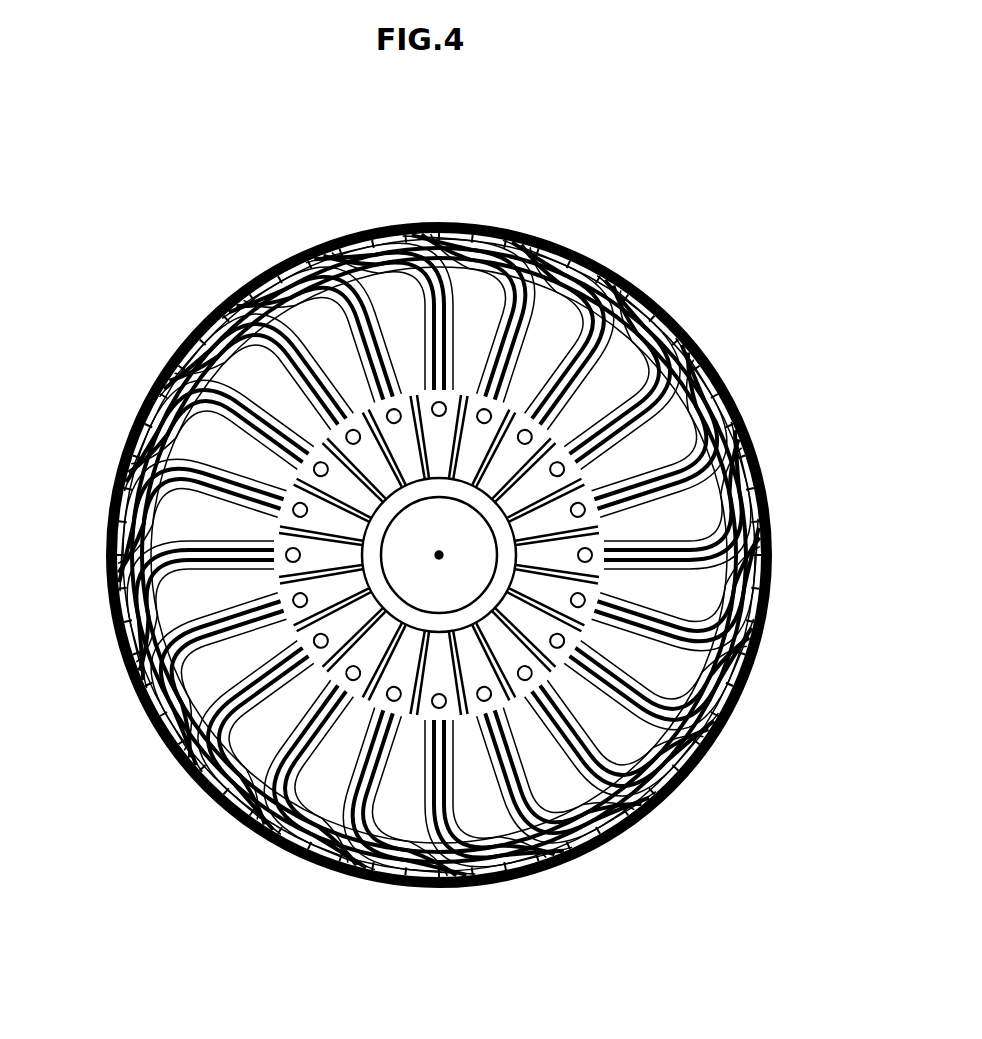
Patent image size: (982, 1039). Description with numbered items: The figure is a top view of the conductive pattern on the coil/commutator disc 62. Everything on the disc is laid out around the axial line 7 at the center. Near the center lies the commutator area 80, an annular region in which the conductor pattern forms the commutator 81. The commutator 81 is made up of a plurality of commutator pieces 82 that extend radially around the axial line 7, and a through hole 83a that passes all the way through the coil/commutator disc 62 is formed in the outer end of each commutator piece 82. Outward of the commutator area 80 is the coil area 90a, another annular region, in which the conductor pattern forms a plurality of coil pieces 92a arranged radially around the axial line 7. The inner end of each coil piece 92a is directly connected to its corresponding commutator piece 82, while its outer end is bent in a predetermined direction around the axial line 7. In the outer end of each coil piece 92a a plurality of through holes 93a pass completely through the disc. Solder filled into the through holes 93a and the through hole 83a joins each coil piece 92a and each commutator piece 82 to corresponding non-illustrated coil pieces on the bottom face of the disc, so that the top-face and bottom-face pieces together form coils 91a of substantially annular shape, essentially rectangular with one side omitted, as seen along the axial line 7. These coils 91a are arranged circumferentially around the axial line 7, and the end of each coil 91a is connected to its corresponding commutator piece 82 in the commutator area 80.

The coil/commutator disc 62 is at (96, 190).
The axial line 7 is at (439, 555).
The commutator area 80 is at (383, 672).
The commutator 81 is at (446, 555).
The commutator piece 82 is at (337, 588).
The through hole 83a is at (323, 587).
The coil area 90a is at (620, 374).
The coil 91a is at (446, 555).
The coil piece 92a is at (640, 463).
The through holes 93a is at (770, 583).